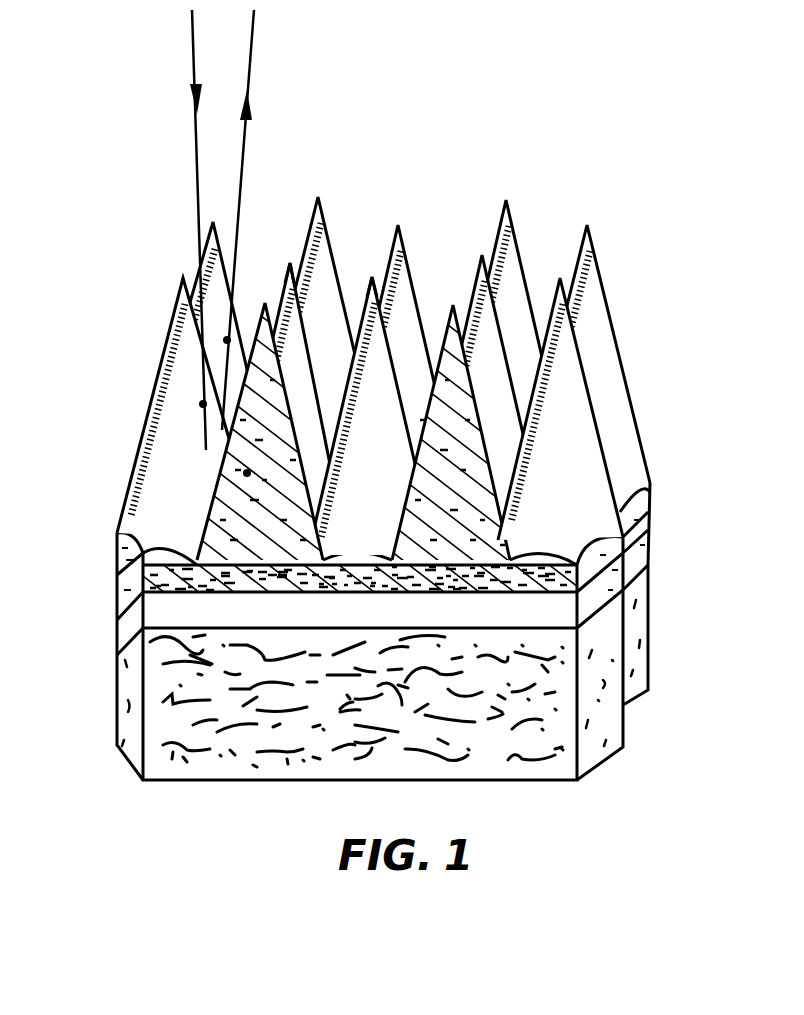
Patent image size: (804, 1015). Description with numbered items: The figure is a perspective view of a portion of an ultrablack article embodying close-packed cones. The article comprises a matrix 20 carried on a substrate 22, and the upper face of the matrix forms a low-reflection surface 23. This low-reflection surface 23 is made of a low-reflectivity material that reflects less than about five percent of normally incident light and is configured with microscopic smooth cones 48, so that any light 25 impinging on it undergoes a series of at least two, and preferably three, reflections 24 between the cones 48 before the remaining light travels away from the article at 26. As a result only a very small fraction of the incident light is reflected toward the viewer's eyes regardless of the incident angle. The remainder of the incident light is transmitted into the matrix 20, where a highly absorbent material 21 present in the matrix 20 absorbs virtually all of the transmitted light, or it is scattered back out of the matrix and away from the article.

The matrix 20 is at (352, 366).
The highly absorbent material 21 is at (207, 577).
The substrate 22 is at (88, 598).
The low-reflection surface 23 is at (617, 347).
The reflections 24 is at (247, 473).
The light 25 is at (174, 230).
The light traveling away from the article 26 is at (259, 220).
The microscopic smooth cones 48 is at (372, 277).